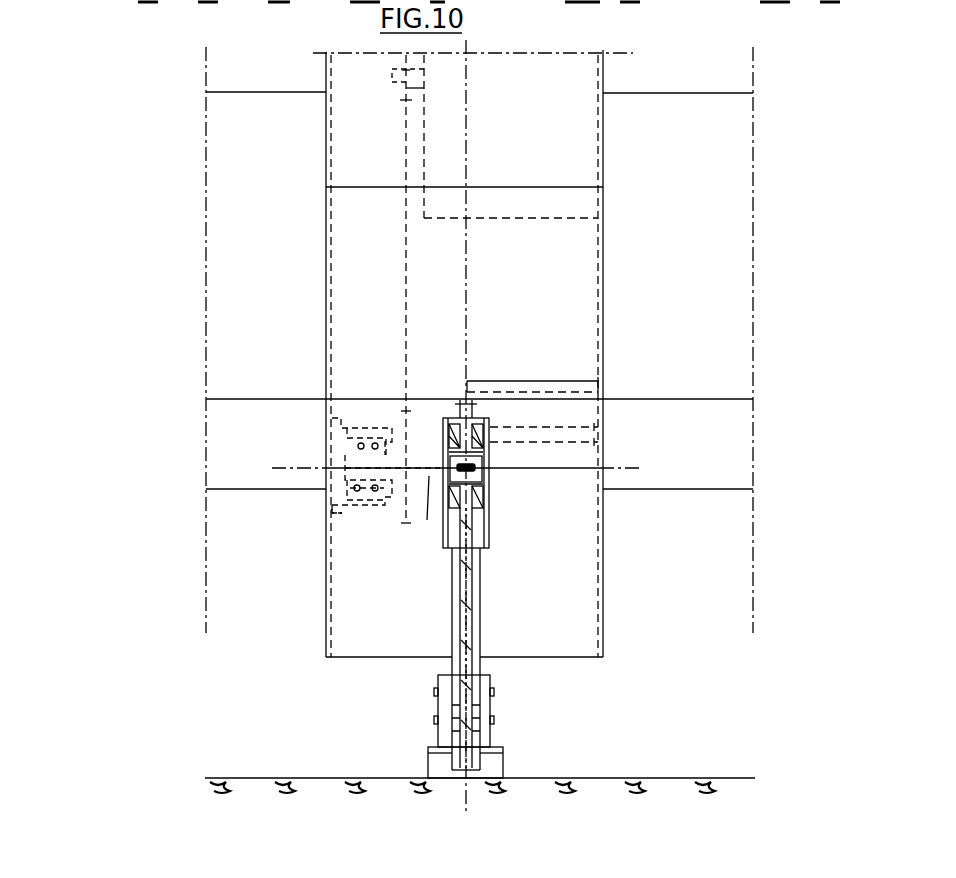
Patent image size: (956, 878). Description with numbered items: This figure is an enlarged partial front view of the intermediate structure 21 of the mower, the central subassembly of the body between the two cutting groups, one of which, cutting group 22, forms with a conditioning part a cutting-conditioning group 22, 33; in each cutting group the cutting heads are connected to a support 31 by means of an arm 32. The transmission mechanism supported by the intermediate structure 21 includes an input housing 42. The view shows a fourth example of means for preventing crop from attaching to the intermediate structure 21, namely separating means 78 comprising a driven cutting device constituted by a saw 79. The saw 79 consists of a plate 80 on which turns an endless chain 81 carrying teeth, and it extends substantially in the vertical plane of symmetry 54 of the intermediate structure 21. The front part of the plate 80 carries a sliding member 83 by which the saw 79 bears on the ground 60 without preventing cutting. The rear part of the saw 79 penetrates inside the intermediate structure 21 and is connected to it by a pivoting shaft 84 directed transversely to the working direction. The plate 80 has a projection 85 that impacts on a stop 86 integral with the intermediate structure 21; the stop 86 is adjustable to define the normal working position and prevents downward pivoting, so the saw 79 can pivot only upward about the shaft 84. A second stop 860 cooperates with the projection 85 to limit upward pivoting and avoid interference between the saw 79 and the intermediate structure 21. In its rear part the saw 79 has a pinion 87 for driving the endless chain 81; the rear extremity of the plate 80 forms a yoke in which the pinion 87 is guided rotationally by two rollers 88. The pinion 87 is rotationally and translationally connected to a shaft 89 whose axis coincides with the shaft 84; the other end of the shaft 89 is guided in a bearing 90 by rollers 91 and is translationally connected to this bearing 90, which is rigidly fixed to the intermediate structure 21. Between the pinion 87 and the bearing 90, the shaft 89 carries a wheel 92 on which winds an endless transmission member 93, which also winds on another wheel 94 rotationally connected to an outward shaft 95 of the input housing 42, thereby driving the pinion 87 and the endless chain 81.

The intermediate structure 21 is at (345, 283).
The cutting group 22 is at (668, 3).
The conditioning group 33 is at (233, 283).
The support 31 is at (313, 331).
The arm 32 is at (563, 331).
The input housing 42 is at (554, 203).
The vertical plane of symmetry 54 is at (466, 137).
The ground 60 is at (642, 35).
The separating means 78 is at (403, 671).
The saw 79 is at (475, 597).
The plate 80 is at (478, 632).
The endless chain 81 is at (460, 574).
The sliding member 83 is at (492, 768).
The pivoting shaft 84 is at (291, 469).
The projection 85 is at (477, 407).
The stop 86 is at (556, 386).
The pinion 87 is at (486, 474).
The rollers 88 is at (455, 440).
The shaft 89 is at (430, 515).
The bearing 90 is at (332, 512).
The rollers 91 is at (368, 496).
The wheel 92 is at (404, 428).
The endless transmission member 93 is at (405, 231).
The wheel 94 is at (404, 97).
The outward shaft 95 is at (392, 80).
The second stop 860 is at (563, 435).